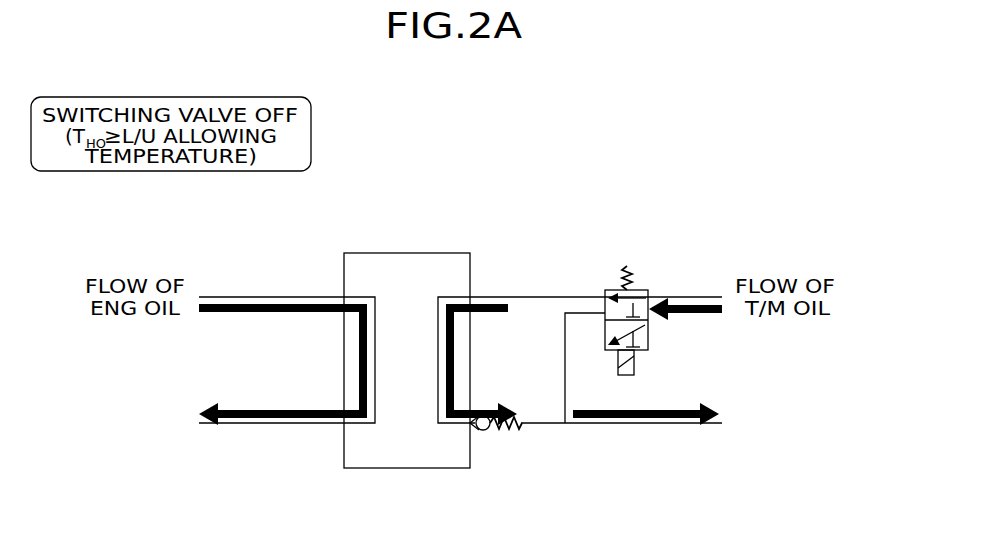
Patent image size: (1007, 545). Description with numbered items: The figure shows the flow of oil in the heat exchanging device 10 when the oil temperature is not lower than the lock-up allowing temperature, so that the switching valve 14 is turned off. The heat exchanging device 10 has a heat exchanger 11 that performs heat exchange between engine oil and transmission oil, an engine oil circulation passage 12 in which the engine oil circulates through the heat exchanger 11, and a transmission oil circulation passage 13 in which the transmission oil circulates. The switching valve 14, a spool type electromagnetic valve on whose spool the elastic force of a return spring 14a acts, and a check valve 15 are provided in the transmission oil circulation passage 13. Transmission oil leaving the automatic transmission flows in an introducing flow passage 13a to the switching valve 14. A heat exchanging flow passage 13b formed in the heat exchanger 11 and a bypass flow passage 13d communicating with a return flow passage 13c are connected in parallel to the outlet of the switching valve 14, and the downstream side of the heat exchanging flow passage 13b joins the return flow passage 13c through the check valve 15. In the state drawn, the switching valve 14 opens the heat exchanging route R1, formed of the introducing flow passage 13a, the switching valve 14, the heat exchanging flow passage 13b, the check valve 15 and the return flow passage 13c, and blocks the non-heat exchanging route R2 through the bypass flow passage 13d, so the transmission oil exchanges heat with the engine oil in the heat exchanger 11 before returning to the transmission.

The heat exchanging device 10 is at (480, 190).
The heat exchanger 11 is at (401, 253).
The engine oil circulation passage 12 is at (250, 442).
The transmission oil circulation passage 13 is at (555, 384).
The introducing flow passage 13a is at (697, 297).
The heat exchanging flow passage 13b is at (438, 313).
The return flow passage 13c is at (658, 428).
The bypass flow passage 13d is at (565, 333).
The switching valve 14 is at (661, 294).
The return spring 14a is at (627, 266).
The check valve 15 is at (485, 443).
The heat exchanging route R1 is at (557, 297).
The non-heat exchanging route R2 is at (568, 375).